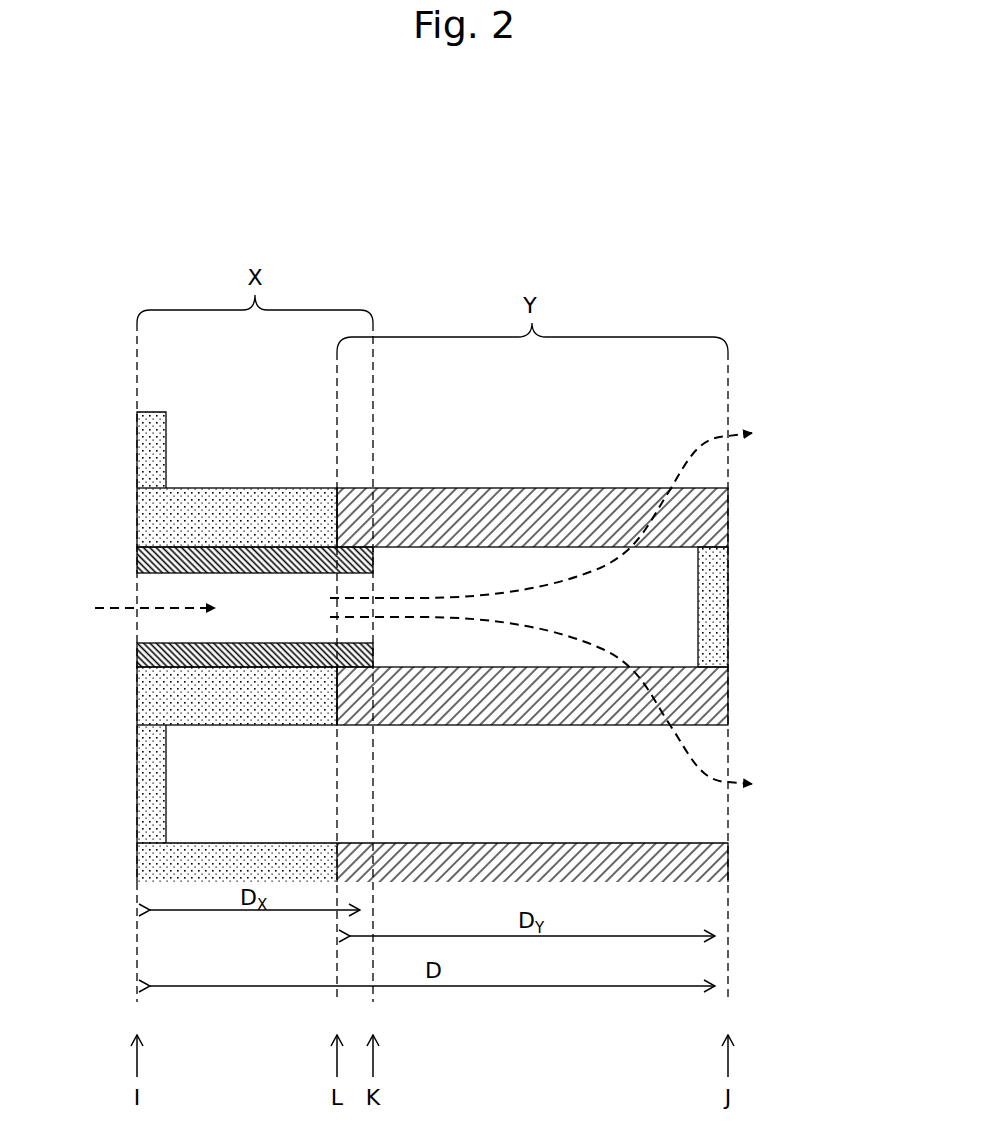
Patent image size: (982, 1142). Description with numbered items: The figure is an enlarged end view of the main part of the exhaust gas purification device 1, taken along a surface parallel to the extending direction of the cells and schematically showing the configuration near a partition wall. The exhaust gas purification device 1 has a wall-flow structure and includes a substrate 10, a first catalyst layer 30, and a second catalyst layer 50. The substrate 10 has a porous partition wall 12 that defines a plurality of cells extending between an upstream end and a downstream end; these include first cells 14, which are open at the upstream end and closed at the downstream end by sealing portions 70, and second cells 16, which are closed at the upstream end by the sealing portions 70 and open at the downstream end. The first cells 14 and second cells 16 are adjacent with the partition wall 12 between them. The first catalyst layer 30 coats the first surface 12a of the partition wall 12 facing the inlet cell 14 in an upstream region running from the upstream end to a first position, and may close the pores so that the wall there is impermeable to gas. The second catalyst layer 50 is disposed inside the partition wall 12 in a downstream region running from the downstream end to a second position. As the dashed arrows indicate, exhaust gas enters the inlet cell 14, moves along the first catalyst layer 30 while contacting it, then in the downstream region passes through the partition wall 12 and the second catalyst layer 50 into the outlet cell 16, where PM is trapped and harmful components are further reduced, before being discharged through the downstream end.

The exhaust gas purification device 1 is at (815, 423).
The substrate 10 is at (250, 494).
The partition wall 12 is at (397, 654).
The first surface 12a is at (250, 667).
The first cell 14 is at (605, 619).
The second cell 16 is at (382, 457).
The first catalyst layer 30 is at (145, 655).
The second catalyst layer 50 is at (511, 703).
The sealing portion 70 is at (150, 430).